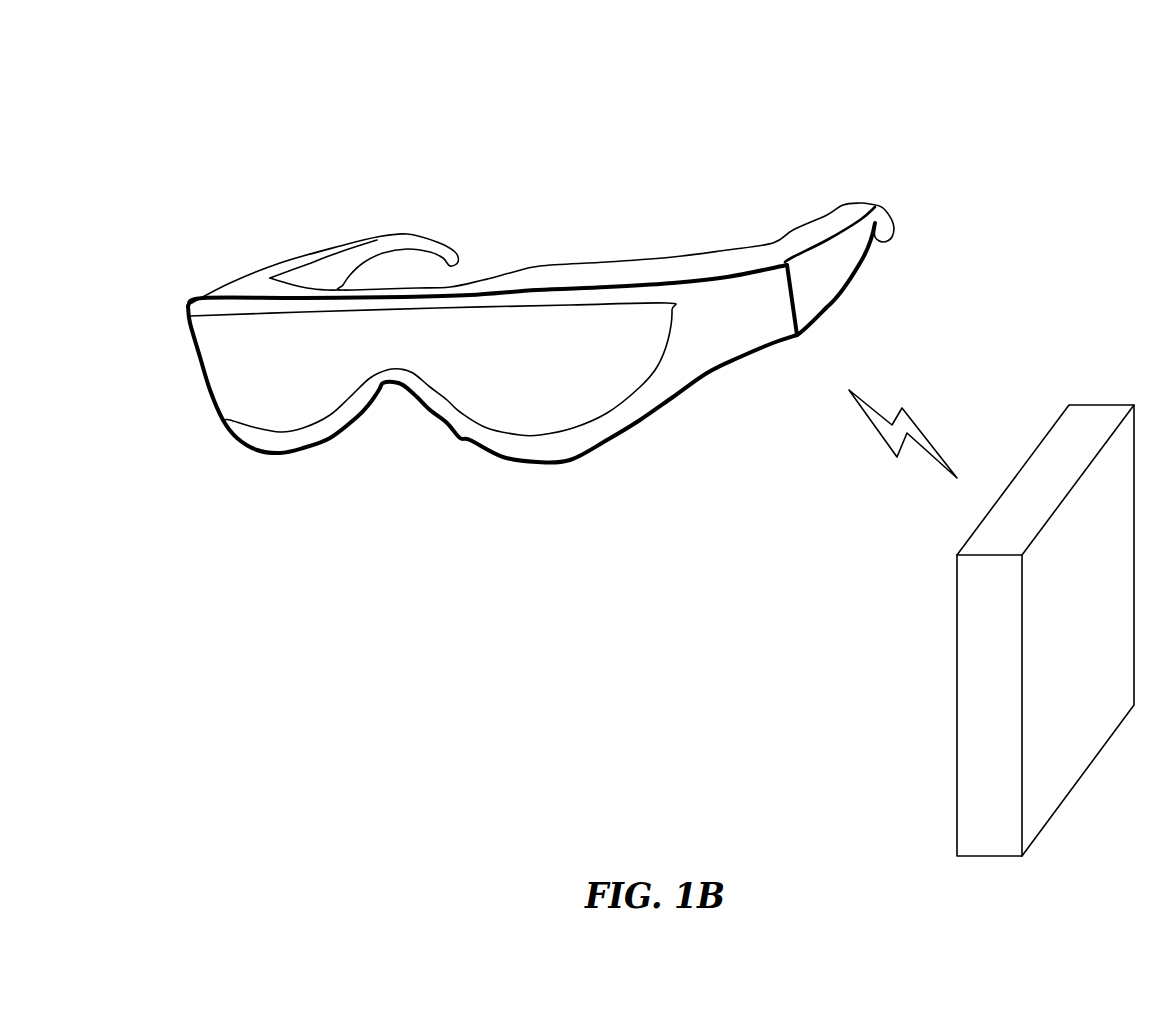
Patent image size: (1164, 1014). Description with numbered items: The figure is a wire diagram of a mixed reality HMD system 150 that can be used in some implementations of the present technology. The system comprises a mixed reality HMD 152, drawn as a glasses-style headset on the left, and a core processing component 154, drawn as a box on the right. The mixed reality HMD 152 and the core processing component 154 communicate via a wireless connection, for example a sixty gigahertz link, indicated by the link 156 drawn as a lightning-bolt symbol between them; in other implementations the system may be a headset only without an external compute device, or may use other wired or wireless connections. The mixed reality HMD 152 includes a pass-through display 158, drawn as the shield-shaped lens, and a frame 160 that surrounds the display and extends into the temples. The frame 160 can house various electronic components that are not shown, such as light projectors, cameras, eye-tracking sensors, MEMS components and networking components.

The mixed reality HMD system 150 is at (165, 125).
The mixed reality HMD 152 is at (187, 316).
The core processing component 154 is at (957, 630).
The link 156 is at (890, 452).
The pass-through display 158 is at (670, 307).
The frame 160 is at (823, 272).